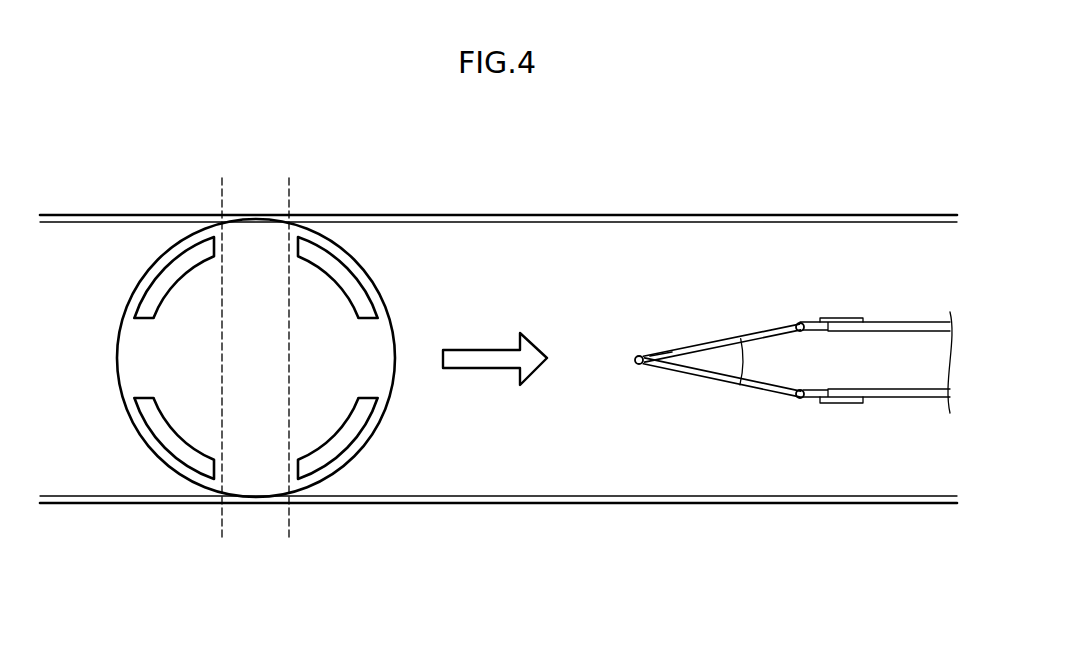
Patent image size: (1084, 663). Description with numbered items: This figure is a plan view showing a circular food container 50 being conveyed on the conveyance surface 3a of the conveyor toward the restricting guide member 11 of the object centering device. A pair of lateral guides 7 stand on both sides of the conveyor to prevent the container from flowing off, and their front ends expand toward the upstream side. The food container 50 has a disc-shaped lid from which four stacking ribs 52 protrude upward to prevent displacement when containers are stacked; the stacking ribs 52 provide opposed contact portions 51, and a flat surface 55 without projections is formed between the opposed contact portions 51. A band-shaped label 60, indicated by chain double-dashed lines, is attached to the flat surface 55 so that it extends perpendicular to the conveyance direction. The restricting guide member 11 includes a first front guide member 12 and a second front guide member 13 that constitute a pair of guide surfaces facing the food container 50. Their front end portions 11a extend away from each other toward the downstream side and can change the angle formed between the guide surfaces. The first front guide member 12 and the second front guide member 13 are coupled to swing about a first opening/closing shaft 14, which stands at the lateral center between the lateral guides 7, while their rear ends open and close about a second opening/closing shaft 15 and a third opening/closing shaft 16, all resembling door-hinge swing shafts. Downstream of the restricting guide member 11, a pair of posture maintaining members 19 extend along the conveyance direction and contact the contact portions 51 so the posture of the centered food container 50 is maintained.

The conveyance surface 3a is at (627, 459).
The lateral guide 7 is at (553, 214).
The restricting guide member 11 is at (917, 305).
The front end portion 11a is at (667, 353).
The first front guide member 12 is at (704, 345).
The second front guide member 13 is at (690, 376).
The first opening/closing shaft 14 is at (637, 356).
The second opening/closing shaft 15 is at (803, 322).
The third opening/closing shaft 16 is at (803, 399).
The posture maintaining member 19 is at (888, 396).
The food container 50 is at (372, 286).
The contact portion 51 is at (372, 323).
The stacking rib 52 is at (340, 272).
The flat surface 55 is at (142, 357).
The label 60 is at (222, 213).